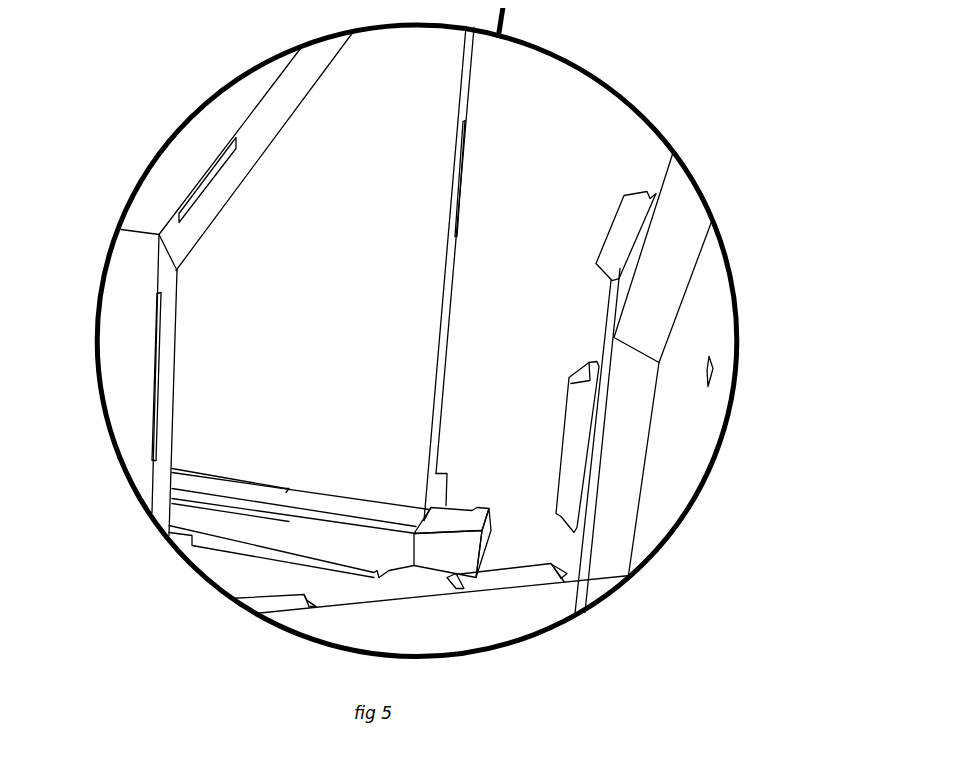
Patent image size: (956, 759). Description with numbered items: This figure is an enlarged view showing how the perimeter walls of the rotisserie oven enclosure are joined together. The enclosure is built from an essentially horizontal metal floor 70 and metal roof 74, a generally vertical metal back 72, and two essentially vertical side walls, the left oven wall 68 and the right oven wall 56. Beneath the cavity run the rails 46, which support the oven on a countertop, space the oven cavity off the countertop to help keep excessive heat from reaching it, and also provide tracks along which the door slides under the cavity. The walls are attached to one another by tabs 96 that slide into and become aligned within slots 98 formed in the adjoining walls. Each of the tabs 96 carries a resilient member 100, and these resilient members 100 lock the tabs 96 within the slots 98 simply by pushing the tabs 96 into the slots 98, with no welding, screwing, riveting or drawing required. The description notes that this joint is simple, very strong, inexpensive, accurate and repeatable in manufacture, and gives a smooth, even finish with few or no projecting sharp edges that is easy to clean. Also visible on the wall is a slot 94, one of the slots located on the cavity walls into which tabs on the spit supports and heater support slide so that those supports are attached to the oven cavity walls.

The rails 46 is at (450, 546).
The right oven wall 56 is at (127, 310).
The left oven wall 68 is at (410, 97).
The floor 70 is at (460, 616).
The back 72 is at (712, 312).
The roof 74 is at (153, 188).
The slots 94 is at (713, 368).
The tabs 96 is at (627, 232).
The slots 98 is at (200, 190).
The resilient members 100 is at (622, 265).